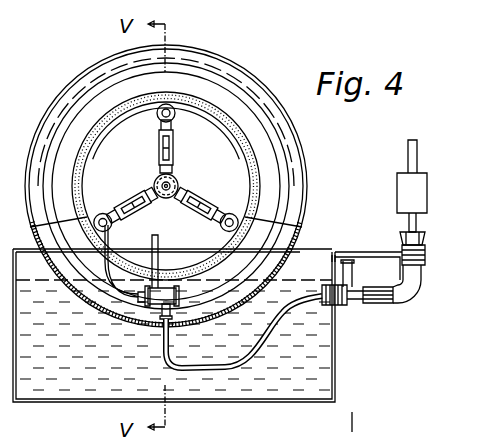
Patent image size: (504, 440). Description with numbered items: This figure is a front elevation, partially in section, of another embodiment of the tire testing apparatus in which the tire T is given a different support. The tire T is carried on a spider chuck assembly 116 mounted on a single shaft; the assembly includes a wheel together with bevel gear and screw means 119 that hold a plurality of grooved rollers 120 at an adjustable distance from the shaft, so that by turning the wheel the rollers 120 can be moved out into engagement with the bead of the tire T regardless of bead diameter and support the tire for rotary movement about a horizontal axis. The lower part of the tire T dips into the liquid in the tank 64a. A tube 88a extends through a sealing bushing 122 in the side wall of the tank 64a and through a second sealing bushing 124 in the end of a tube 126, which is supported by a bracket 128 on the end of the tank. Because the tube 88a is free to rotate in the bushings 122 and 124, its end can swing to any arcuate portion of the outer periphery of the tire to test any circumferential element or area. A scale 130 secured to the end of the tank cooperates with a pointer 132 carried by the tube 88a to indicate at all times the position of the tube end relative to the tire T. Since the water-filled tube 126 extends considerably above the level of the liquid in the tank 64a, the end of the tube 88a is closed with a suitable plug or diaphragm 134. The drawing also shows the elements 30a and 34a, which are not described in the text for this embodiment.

The tire T is at (70, 81).
The solenoid valve 30a is at (397, 189).
The valve 34a is at (164, 287).
The tank 64a is at (337, 386).
The tube 88a is at (263, 348).
The spider chuck assembly 116 is at (172, 160).
The bevel gear and screw means 119 is at (153, 190).
The grooved rollers 120 is at (152, 118).
The sealing bushing 122 is at (341, 306).
The sealing bushing 124 is at (370, 304).
The tube 126 is at (409, 286).
The bracket 128 is at (365, 253).
The scale 130 is at (344, 259).
The pointer 132 is at (354, 279).
The plug or diaphragm 134 is at (180, 328).